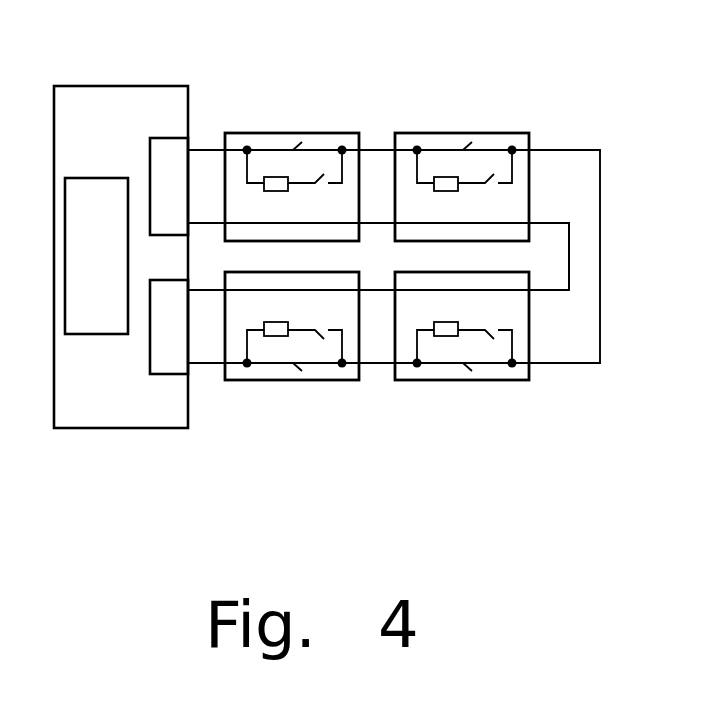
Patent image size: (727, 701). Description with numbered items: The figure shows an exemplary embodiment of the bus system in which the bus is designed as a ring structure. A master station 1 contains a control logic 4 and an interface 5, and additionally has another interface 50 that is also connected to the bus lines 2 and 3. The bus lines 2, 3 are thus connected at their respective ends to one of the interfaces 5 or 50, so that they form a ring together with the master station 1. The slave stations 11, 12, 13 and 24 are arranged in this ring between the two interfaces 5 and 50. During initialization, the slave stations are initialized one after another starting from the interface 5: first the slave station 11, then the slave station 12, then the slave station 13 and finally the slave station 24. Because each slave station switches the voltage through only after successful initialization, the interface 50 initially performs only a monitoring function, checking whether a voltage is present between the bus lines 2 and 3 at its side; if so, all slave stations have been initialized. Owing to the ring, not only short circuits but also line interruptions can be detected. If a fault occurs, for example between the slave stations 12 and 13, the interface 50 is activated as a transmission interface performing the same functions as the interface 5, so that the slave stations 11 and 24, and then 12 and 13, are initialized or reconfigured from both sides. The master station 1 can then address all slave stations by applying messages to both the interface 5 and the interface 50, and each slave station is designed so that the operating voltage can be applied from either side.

The master station 1 is at (122, 86).
The bus line 2 is at (212, 150).
The bus line 3 is at (568, 240).
The control logic 4 is at (75, 243).
The interface 5 is at (161, 162).
The interface 50 is at (163, 353).
The slave station 11 is at (257, 133).
The slave station 12 is at (427, 131).
The slave station 13 is at (428, 383).
The slave station 24 is at (258, 383).